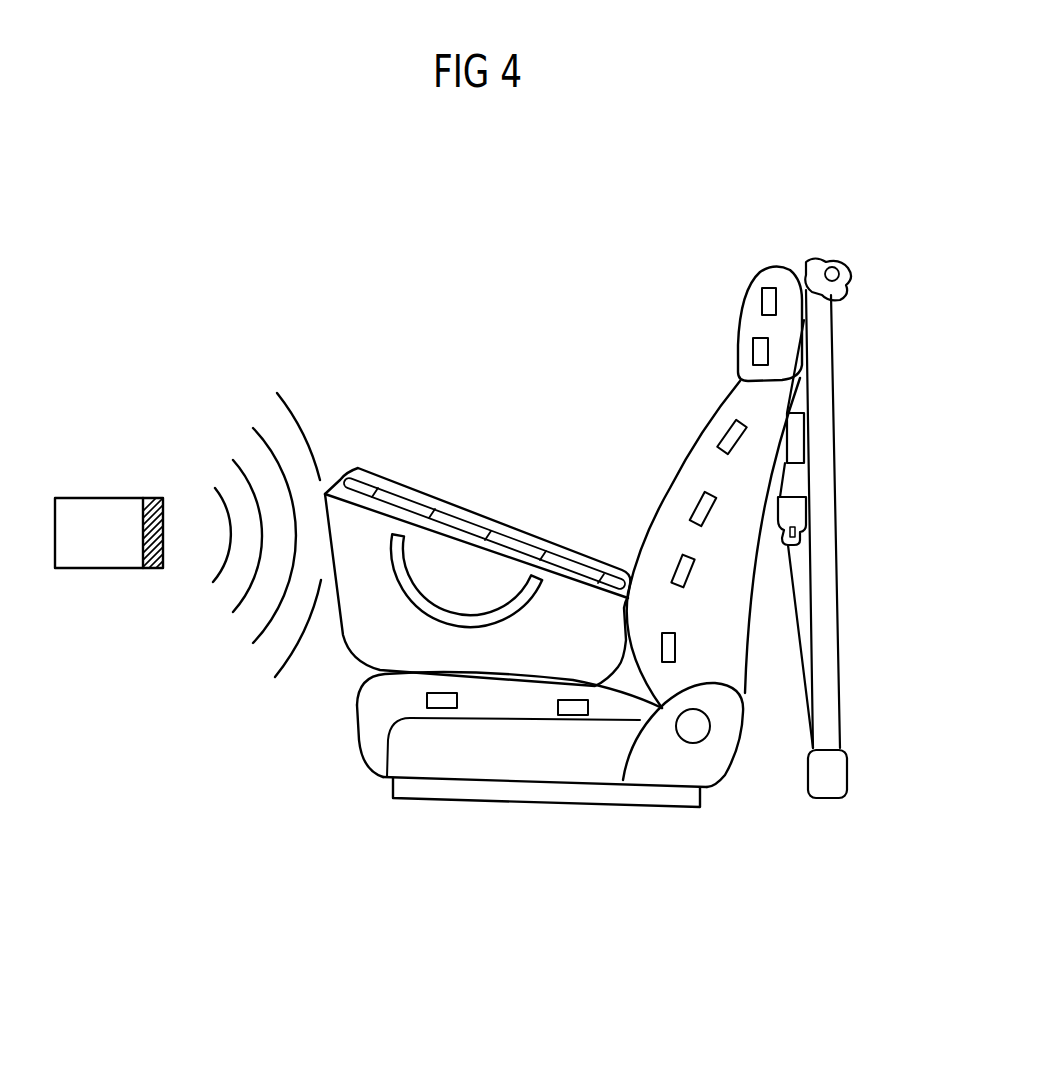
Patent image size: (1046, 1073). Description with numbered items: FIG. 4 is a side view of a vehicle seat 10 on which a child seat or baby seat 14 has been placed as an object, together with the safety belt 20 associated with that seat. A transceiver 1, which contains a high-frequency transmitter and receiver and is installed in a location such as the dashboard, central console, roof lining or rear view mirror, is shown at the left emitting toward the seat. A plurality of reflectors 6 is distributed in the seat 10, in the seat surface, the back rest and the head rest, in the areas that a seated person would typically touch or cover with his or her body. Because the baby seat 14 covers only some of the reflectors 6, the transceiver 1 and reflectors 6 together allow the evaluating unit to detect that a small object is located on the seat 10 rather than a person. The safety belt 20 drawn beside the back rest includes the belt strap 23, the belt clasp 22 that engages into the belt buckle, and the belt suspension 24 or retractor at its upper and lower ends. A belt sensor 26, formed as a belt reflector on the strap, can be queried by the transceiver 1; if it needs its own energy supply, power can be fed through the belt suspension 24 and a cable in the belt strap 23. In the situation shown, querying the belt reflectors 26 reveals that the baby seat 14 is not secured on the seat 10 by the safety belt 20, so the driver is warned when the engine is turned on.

The transceiver 1 is at (100, 512).
The reflectors 6 is at (762, 300).
The seat 10 is at (770, 834).
The child seat 14 is at (433, 446).
The safety belt 20 is at (859, 529).
The belt clasp 22 is at (793, 518).
The belt strap 23 is at (825, 650).
The belt suspension 24 is at (845, 273).
The belt sensor 26 is at (797, 432).